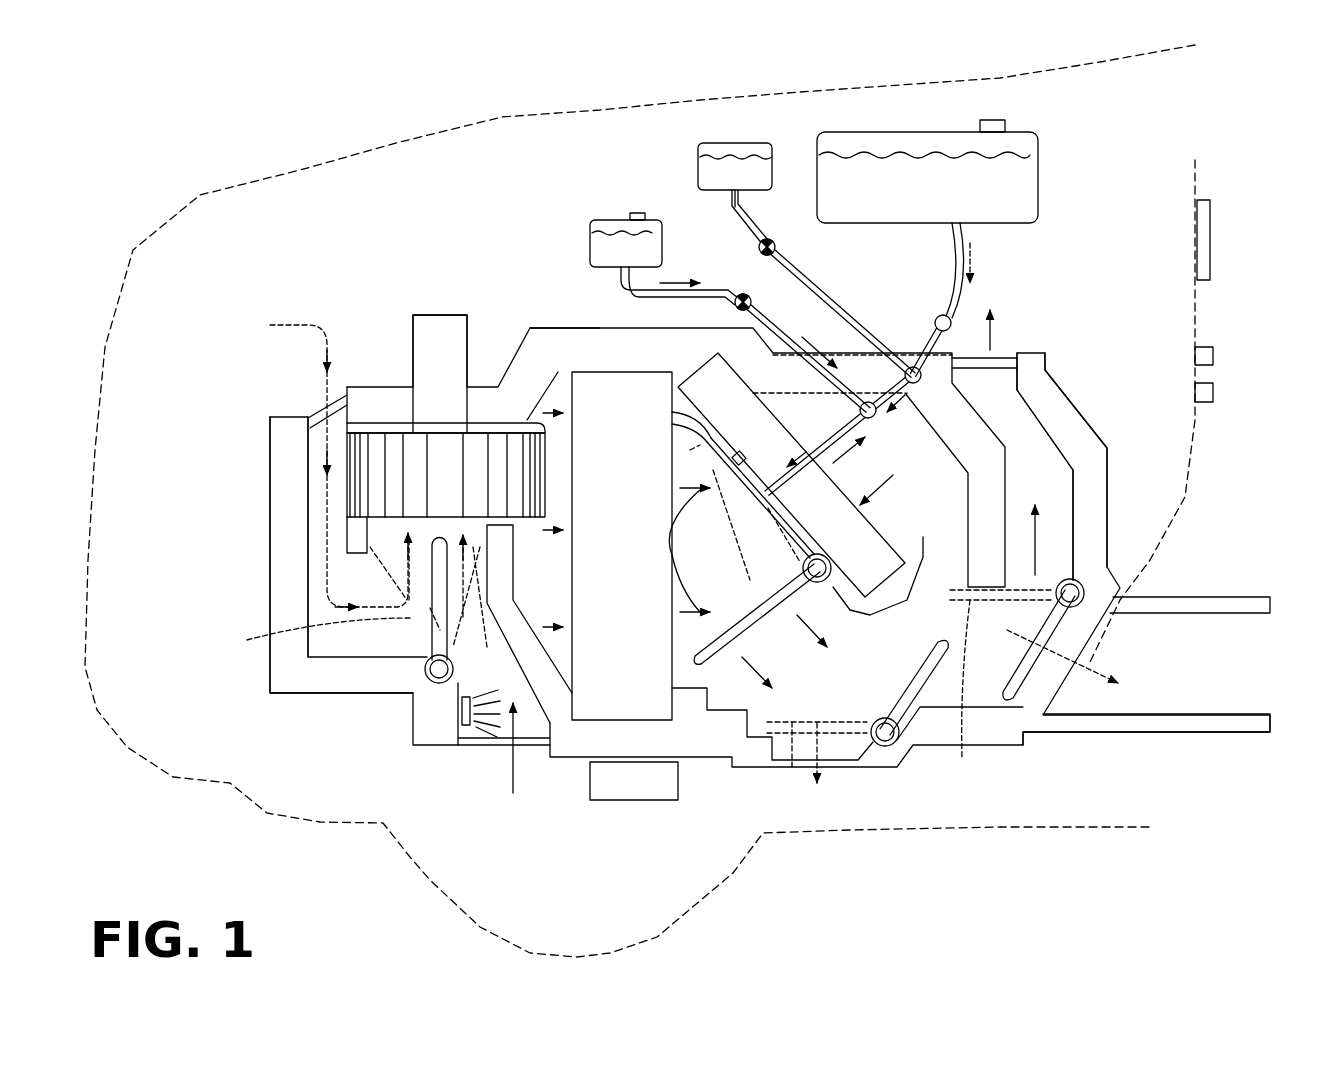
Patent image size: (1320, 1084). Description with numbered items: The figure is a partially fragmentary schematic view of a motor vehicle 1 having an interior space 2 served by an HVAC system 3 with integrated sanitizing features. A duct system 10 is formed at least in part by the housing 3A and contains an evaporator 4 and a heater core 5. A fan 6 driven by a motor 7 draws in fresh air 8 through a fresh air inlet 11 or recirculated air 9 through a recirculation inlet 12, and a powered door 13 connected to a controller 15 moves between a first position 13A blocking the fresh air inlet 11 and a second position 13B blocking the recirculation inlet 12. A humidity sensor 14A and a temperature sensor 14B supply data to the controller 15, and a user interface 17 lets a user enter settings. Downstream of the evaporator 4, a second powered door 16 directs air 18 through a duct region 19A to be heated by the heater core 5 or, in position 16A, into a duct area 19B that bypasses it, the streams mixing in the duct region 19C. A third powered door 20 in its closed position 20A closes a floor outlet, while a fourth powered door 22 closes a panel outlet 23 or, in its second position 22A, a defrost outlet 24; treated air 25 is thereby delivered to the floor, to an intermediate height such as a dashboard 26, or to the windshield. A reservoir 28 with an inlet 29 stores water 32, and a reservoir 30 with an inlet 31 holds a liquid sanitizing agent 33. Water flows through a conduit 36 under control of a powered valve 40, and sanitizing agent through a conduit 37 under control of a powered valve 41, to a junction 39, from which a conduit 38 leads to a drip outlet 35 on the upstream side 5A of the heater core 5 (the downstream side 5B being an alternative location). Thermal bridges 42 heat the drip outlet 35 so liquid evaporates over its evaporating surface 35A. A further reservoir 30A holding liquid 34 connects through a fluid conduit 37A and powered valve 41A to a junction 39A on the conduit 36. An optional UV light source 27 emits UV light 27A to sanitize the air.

The motor vehicle 1 is at (193, 195).
The interior space 2 is at (1264, 152).
The HVAC system 3 is at (593, 303).
The housing 3A is at (582, 365).
The evaporator 4 is at (562, 372).
The heater core 5 is at (880, 497).
The upstream side 5A is at (707, 432).
The downstream side 5B is at (860, 465).
The fan 6 is at (397, 450).
The motor 7 is at (438, 330).
The fresh air 8 is at (308, 322).
The recirculated air 9 is at (513, 770).
The duct system 10 is at (430, 617).
The fresh air inlet 11 is at (306, 418).
The recirculation inlet 12 is at (490, 734).
The powered door 13 is at (357, 643).
The first position 13A is at (273, 629).
The second position 13B is at (441, 610).
The humidity sensor 14A is at (1215, 356).
The temperature sensor 14B is at (1215, 392).
The controller 15 is at (622, 796).
The second powered door 16 is at (720, 645).
The position 16A is at (770, 538).
The user interface 17 is at (1212, 222).
The air 18 is at (697, 492).
The duct region 19A is at (703, 540).
The duct area 19B is at (807, 695).
The duct region 19C is at (930, 555).
The third powered door 20 is at (917, 688).
The closed position 20A is at (790, 727).
The fourth powered door 22 is at (1008, 700).
The second position 22A is at (950, 698).
The panel outlet 23 is at (1042, 682).
The defrost outlet 24 is at (993, 377).
The treated air 25 is at (993, 330).
The dashboard 26 is at (1188, 496).
The UV light source 27 is at (460, 712).
The UV light 27A is at (480, 725).
The reservoir 28 is at (1044, 175).
The inlet 29 is at (1005, 126).
The reservoir 30 is at (586, 218).
The reservoir 30A is at (695, 160).
The inlet 31 is at (633, 213).
The water 32 is at (865, 170).
The liquid sanitizing agent 33 is at (610, 245).
The liquid 34 is at (712, 168).
The drip outlet 35 is at (720, 460).
The evaporating surface 35A is at (713, 472).
The conduit 36 is at (962, 237).
The conduit 37 is at (790, 333).
The fluid conduit 37A is at (834, 303).
The conduit 38 is at (847, 427).
The junction 39 is at (873, 420).
The junction 39A is at (910, 367).
The powered valve 40 is at (942, 316).
The powered valve 41 is at (744, 296).
The powered valve 41A is at (768, 239).
The thermal bridge 42 is at (740, 460).